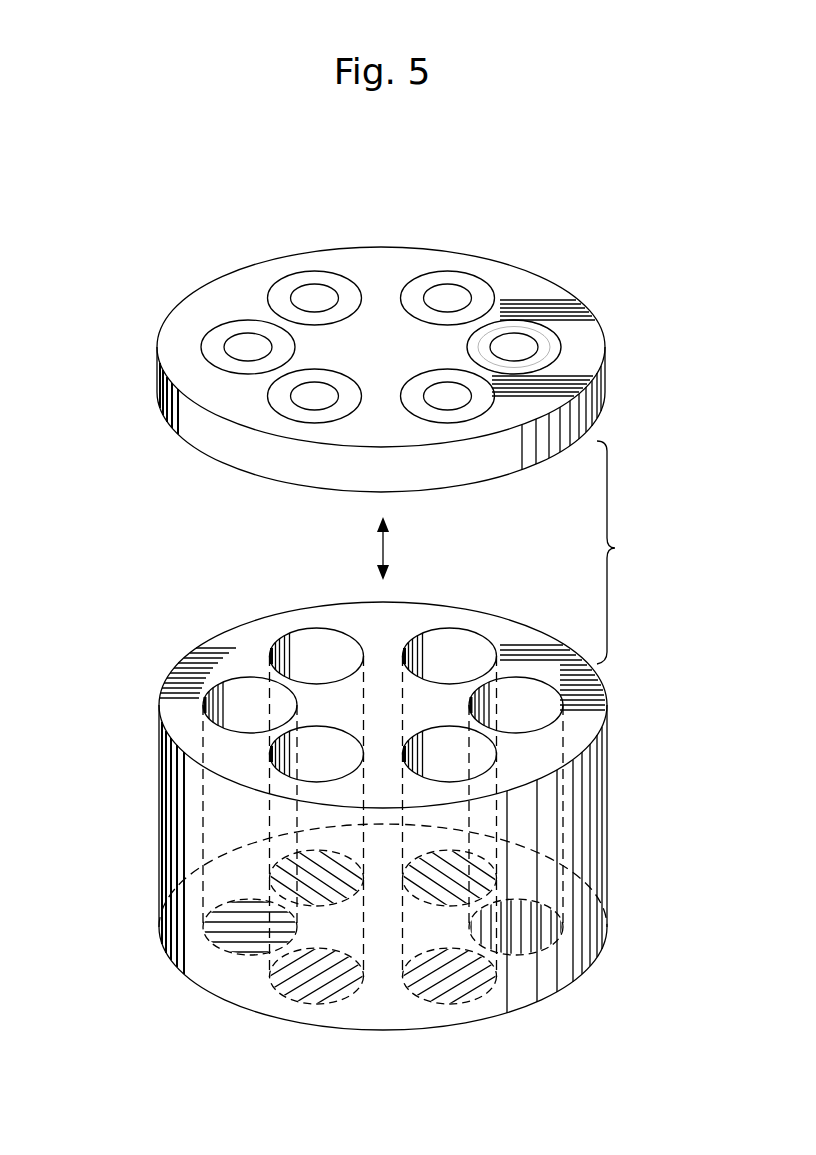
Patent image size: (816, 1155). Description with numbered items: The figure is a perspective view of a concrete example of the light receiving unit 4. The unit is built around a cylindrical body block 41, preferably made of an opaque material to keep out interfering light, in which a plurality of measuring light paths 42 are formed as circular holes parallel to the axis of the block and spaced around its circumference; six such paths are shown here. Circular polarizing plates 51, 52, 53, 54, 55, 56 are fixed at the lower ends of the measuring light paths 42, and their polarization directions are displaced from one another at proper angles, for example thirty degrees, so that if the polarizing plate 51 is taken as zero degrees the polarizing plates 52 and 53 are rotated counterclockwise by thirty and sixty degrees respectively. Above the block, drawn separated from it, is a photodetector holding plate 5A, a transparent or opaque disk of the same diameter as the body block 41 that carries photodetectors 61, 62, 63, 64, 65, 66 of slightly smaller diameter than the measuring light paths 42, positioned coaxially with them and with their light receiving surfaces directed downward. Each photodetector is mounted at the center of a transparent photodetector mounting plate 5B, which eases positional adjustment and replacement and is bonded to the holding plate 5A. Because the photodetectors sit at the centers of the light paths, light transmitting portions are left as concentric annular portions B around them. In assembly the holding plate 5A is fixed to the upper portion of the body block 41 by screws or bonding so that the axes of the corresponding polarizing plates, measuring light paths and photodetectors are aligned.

The light receiving unit 4 is at (618, 552).
The photodetector holding plate 5A is at (375, 268).
The photodetector mounting plate 5B is at (527, 330).
The concentric annular portion B is at (557, 353).
The cylindrical body block 41 is at (608, 788).
The measuring light path 42 is at (532, 712).
The circular polarizing plate 51 is at (522, 928).
The circular polarizing plate 52 is at (458, 877).
The circular polarizing plate 53 is at (312, 878).
The circular polarizing plate 54 is at (250, 930).
The circular polarizing plate 55 is at (318, 980).
The circular polarizing plate 56 is at (452, 982).
The photodetector 61 is at (522, 350).
The photodetector 62 is at (452, 298).
The photodetector 63 is at (318, 298).
The photodetector 64 is at (243, 347).
The photodetector 65 is at (315, 402).
The photodetector 66 is at (452, 400).